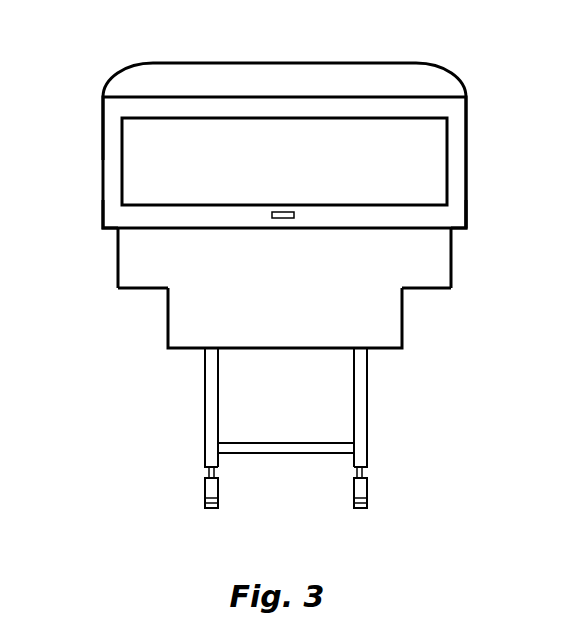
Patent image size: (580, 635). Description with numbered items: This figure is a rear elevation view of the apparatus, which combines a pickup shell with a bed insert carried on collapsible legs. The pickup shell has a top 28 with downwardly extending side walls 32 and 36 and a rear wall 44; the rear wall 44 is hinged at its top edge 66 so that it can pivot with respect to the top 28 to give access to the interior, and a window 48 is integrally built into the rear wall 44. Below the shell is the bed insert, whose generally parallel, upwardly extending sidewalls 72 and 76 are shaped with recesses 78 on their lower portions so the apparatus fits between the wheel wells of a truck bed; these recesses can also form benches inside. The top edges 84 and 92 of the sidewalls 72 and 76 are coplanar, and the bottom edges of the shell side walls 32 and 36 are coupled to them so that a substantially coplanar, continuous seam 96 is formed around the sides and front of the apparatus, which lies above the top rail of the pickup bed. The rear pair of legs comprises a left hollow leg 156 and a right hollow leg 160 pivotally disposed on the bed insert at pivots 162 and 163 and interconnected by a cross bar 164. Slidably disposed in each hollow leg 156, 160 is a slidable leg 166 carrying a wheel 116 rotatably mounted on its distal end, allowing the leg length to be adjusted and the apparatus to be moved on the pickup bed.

The top 28 is at (270, 62).
The top edge 66 is at (385, 95).
The side wall 32 is at (103, 115).
The side wall 36 is at (467, 107).
The rear wall 44 is at (453, 155).
The window 48 is at (293, 169).
The seam 96 is at (112, 229).
The top edge 84 is at (110, 233).
The top edge 92 is at (453, 230).
The sidewall 72 is at (168, 322).
The sidewall 76 is at (405, 337).
The recess 78 is at (142, 287).
The left hollow leg 156 is at (205, 360).
The right hollow leg 160 is at (368, 370).
The pivot 162 is at (218, 353).
The pivot 163 is at (350, 353).
The cross bar 164 is at (245, 455).
The slidable leg 166 is at (208, 473).
The wheel 116 is at (203, 498).